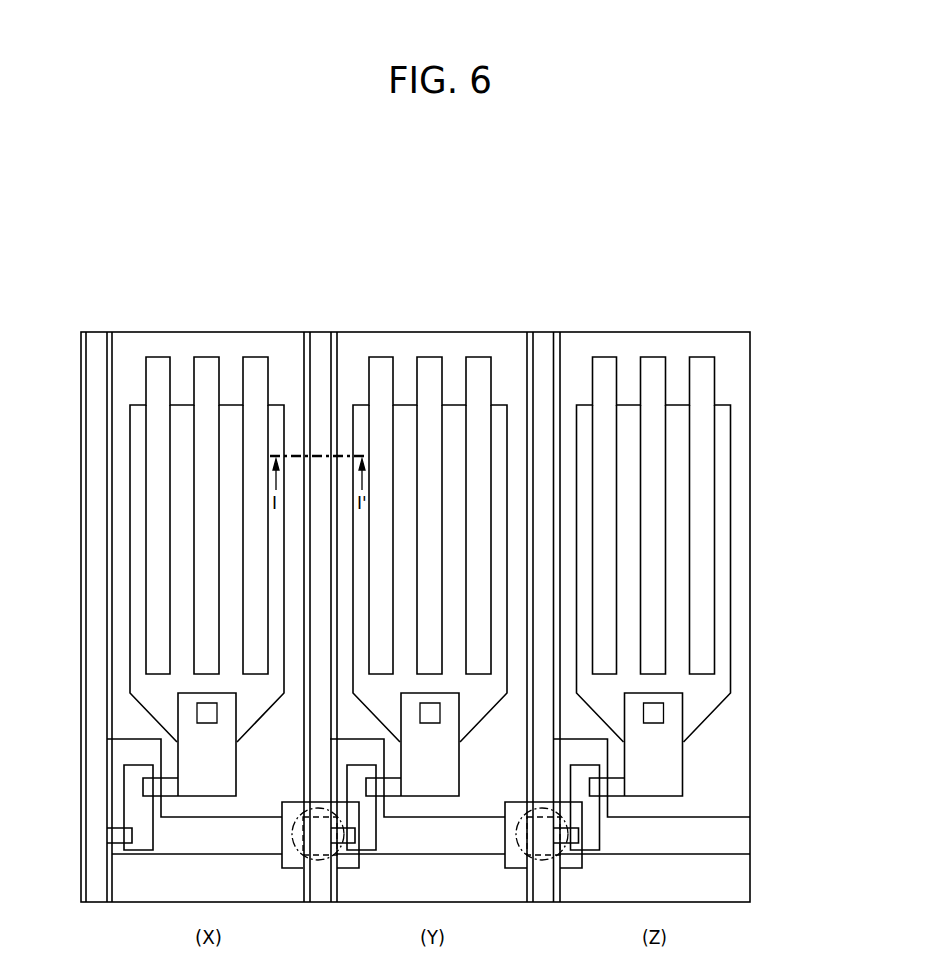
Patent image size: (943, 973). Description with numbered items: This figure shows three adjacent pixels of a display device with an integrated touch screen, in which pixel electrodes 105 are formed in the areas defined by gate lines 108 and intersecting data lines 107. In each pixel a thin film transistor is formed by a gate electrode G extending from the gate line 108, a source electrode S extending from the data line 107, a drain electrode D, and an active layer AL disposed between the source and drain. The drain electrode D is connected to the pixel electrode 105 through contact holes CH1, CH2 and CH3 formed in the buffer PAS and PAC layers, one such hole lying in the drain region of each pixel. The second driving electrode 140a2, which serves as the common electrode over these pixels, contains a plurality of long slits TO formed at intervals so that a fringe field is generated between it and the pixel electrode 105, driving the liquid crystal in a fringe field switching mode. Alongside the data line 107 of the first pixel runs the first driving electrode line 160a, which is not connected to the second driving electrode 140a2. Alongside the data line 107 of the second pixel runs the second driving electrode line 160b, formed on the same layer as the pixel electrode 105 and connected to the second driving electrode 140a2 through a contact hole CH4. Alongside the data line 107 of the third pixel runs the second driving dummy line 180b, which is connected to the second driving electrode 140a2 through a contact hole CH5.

The data line 107 is at (544, 353).
The first driving electrode line 160a is at (110, 366).
The second driving electrode line 160b is at (333, 366).
The second driving dummy line 180b is at (556, 367).
The slit TO is at (702, 370).
The second driving electrode 140a2 is at (727, 373).
The pixel electrode 105 is at (722, 620).
The contact hole CH1 is at (653, 713).
The contact hole CH2 is at (430, 713).
The contact hole CH3 is at (207, 715).
The contact hole CH4 is at (318, 870).
The contact hole CH5 is at (522, 865).
The gate electrode G is at (603, 733).
The drain electrode D is at (603, 783).
The source electrode S is at (560, 867).
The active layer AL is at (588, 815).
The gate line 108 is at (725, 838).